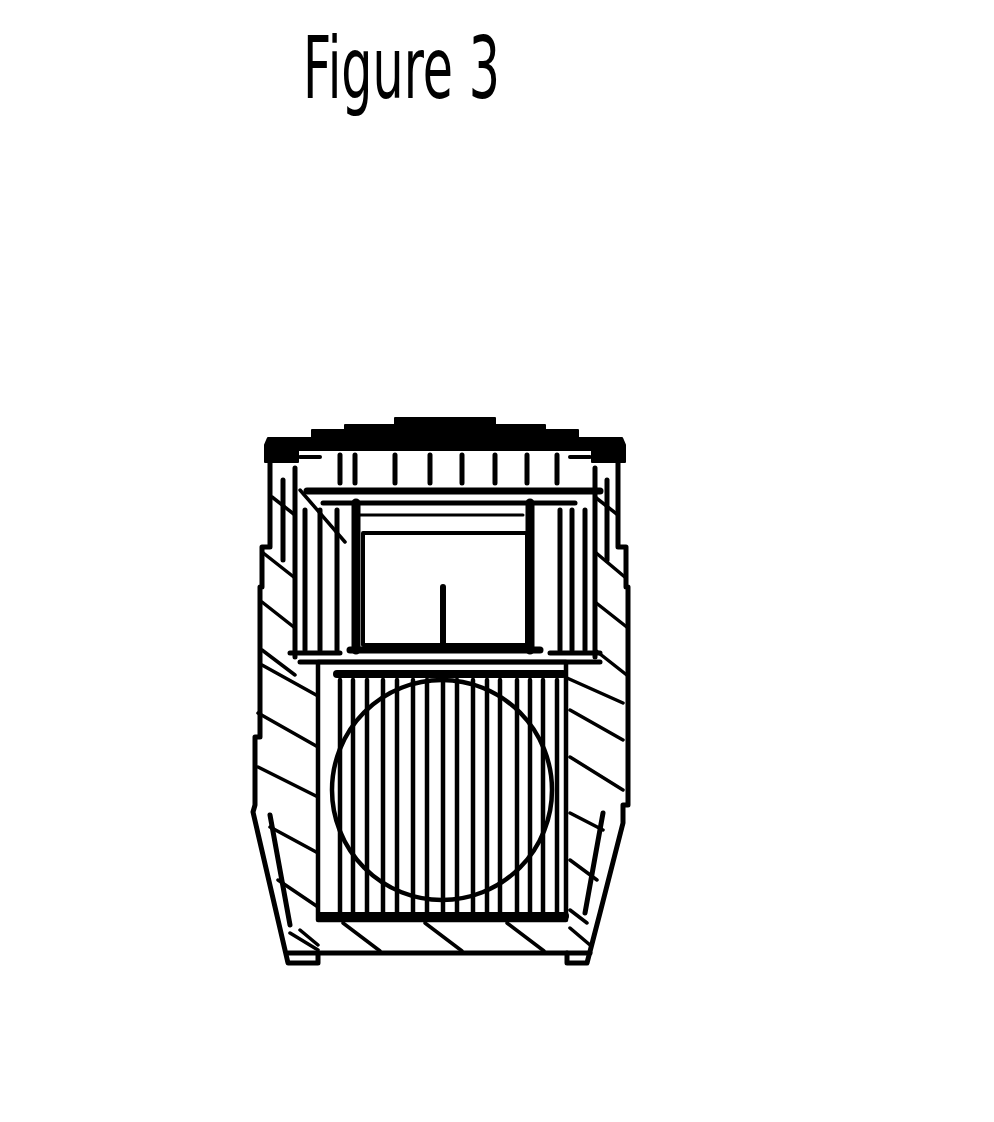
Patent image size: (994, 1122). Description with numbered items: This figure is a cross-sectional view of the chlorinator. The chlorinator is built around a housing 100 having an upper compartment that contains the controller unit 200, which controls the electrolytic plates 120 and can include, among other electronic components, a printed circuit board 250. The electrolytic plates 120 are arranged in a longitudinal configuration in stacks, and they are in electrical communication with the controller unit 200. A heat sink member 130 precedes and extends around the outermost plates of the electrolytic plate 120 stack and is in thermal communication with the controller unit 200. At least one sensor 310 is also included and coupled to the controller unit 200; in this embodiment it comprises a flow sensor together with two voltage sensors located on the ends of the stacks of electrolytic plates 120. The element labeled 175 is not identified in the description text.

The housing 100 is at (627, 700).
The electrolytic plates 120 is at (410, 795).
The heat sink member 130 is at (267, 452).
The cap plate 175 is at (341, 430).
The controller unit 200 is at (535, 425).
The printed circuit board 250 is at (615, 478).
The sensor 310 is at (553, 697).